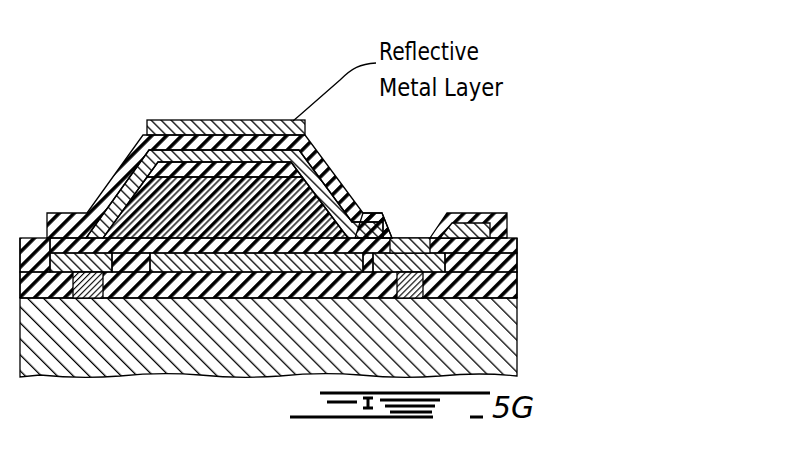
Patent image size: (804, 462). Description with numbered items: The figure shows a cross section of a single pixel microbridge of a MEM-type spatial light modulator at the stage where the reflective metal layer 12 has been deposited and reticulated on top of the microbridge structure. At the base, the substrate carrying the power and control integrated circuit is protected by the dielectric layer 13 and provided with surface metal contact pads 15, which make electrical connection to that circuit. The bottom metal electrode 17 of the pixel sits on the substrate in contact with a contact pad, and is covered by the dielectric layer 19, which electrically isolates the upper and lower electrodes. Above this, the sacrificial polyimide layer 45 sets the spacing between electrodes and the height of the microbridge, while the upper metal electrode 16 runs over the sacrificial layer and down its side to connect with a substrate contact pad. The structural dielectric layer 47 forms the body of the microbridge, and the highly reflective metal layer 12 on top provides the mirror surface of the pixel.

The reflective metal layer 12 is at (243, 118).
The dielectric layer 13 is at (368, 216).
The surface metal contact pads 15 is at (88, 298).
The upper metal electrode 16 is at (350, 190).
The bottom metal electrode 17 is at (200, 298).
The dielectric layer 19 is at (517, 262).
The sacrificial polyimide layer 45 is at (137, 165).
The structural dielectric layer 47 is at (117, 187).